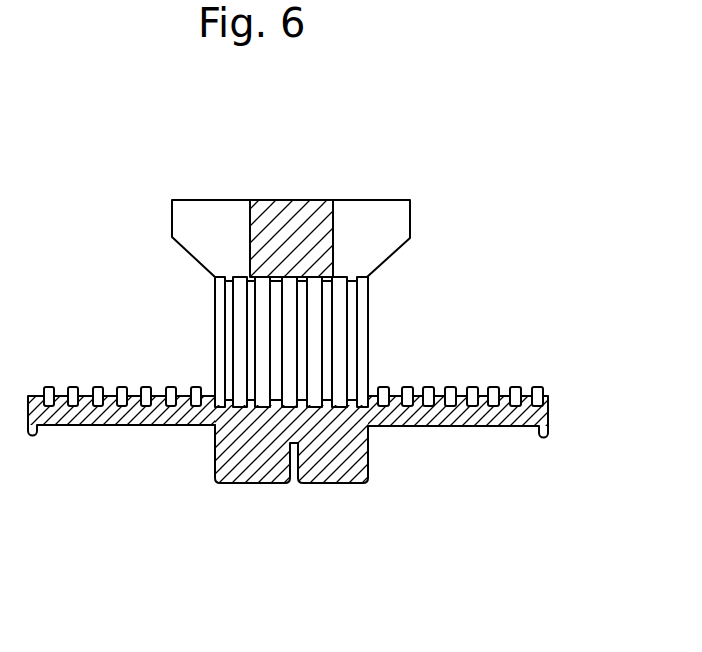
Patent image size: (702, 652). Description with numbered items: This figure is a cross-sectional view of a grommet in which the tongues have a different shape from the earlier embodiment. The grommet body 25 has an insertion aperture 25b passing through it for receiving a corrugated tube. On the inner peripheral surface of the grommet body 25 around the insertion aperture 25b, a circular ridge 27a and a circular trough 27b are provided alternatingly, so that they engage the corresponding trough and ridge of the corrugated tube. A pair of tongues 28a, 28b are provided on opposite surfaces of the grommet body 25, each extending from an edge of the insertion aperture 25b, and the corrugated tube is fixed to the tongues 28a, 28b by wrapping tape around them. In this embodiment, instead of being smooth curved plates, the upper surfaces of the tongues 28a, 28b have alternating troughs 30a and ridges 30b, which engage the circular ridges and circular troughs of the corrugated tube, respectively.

The grommet body 25 is at (394, 229).
The insertion aperture 25b is at (366, 295).
The circular ridge 27a is at (366, 300).
The circular trough 27b is at (216, 288).
The tongue 28a is at (143, 427).
The tongue 28b is at (455, 428).
The trough 30a is at (109, 376).
The ridge 30b is at (508, 382).